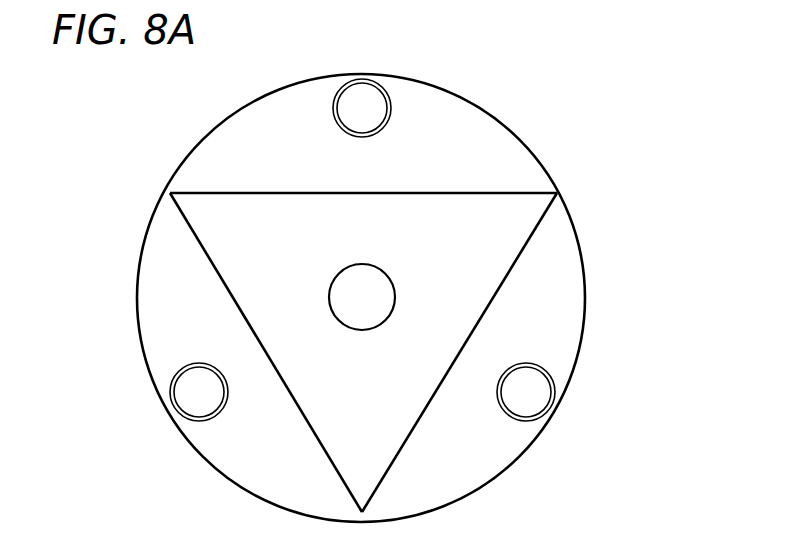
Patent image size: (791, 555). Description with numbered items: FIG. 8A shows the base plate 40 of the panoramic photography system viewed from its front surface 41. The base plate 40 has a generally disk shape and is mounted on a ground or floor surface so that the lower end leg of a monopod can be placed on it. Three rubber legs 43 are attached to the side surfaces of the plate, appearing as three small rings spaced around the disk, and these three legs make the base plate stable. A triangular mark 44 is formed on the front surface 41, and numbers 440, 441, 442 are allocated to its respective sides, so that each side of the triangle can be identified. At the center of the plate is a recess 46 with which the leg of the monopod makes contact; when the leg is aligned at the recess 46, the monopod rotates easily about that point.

The base plate 40 is at (362, 271).
The front surface 41 is at (565, 298).
The rubber legs 43 is at (360, 93).
The triangular mark 44 is at (402, 271).
The first side of triangular mark 440 is at (377, 215).
The second side of triangular mark 441 is at (435, 365).
The third side of triangular mark 442 is at (293, 365).
The recess 46 is at (328, 296).